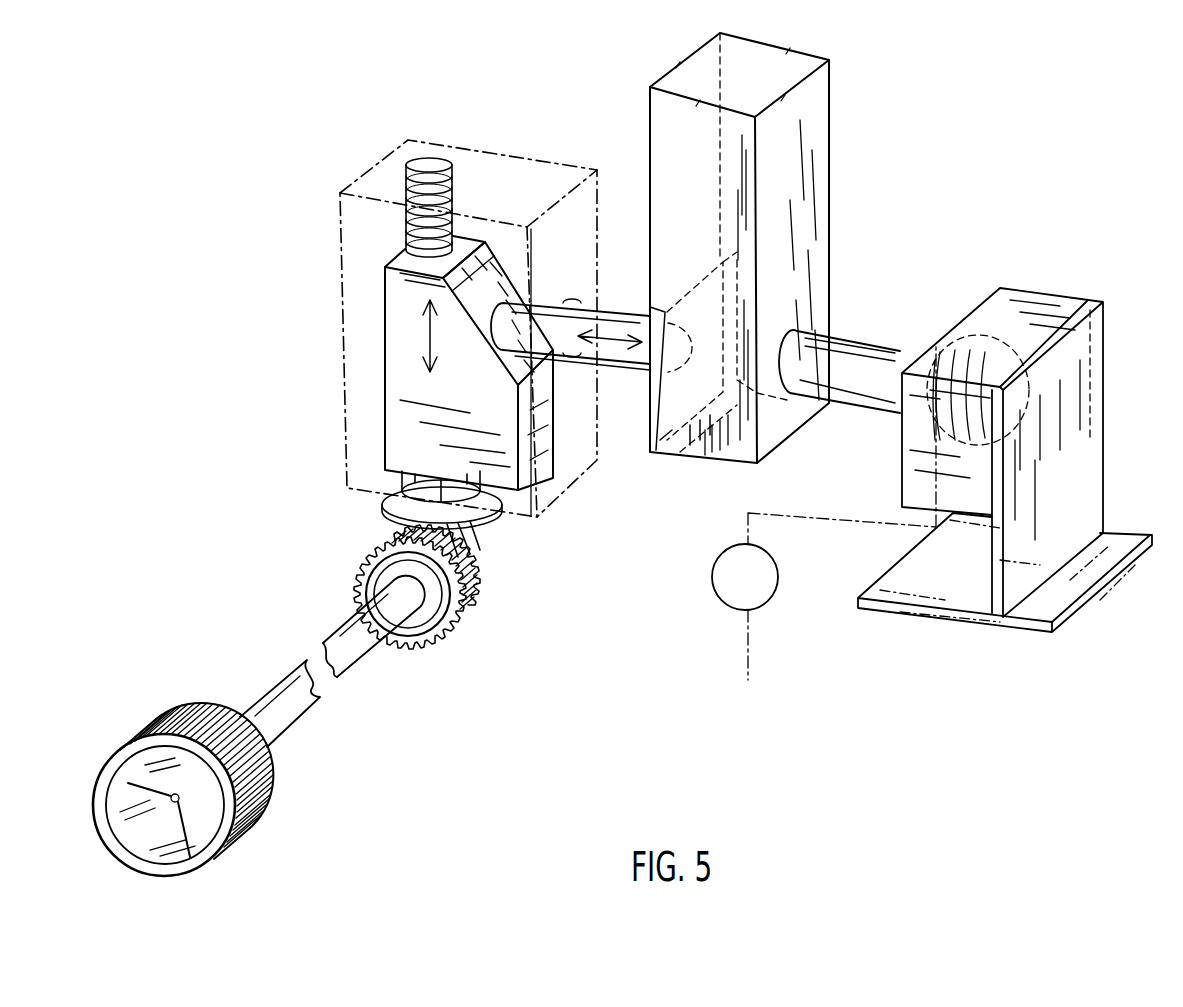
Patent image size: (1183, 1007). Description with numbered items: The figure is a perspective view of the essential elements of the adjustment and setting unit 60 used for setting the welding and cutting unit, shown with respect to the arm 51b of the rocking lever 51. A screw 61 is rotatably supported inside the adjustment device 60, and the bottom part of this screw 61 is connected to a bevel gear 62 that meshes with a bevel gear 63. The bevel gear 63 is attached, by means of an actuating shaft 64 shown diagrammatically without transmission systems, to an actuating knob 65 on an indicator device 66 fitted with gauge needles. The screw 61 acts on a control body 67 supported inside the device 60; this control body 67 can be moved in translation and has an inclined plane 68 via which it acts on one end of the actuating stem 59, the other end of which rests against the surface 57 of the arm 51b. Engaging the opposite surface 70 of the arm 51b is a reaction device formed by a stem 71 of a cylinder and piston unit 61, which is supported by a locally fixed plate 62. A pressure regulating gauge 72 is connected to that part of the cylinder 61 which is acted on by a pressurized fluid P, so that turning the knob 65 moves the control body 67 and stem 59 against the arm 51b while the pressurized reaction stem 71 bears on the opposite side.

The rocking lever 51 is at (833, 96).
The arm 51b is at (663, 113).
The surface 57 is at (660, 447).
The actuating stem 59 is at (628, 360).
The adjustment and setting unit 60 is at (357, 332).
The screw 61 is at (428, 165).
The bevel gear 62 is at (477, 530).
The bevel gear 63 is at (473, 593).
The actuating shaft 64 is at (283, 690).
The actuating knob 65 is at (205, 723).
The indicator device 66 is at (207, 812).
The control body 67 is at (400, 392).
The inclined plane 68 is at (485, 250).
The surface 70 is at (830, 283).
The stem 71 is at (853, 345).
The pressure regulating gauge 72 is at (735, 578).
The pressurized fluid P is at (745, 663).